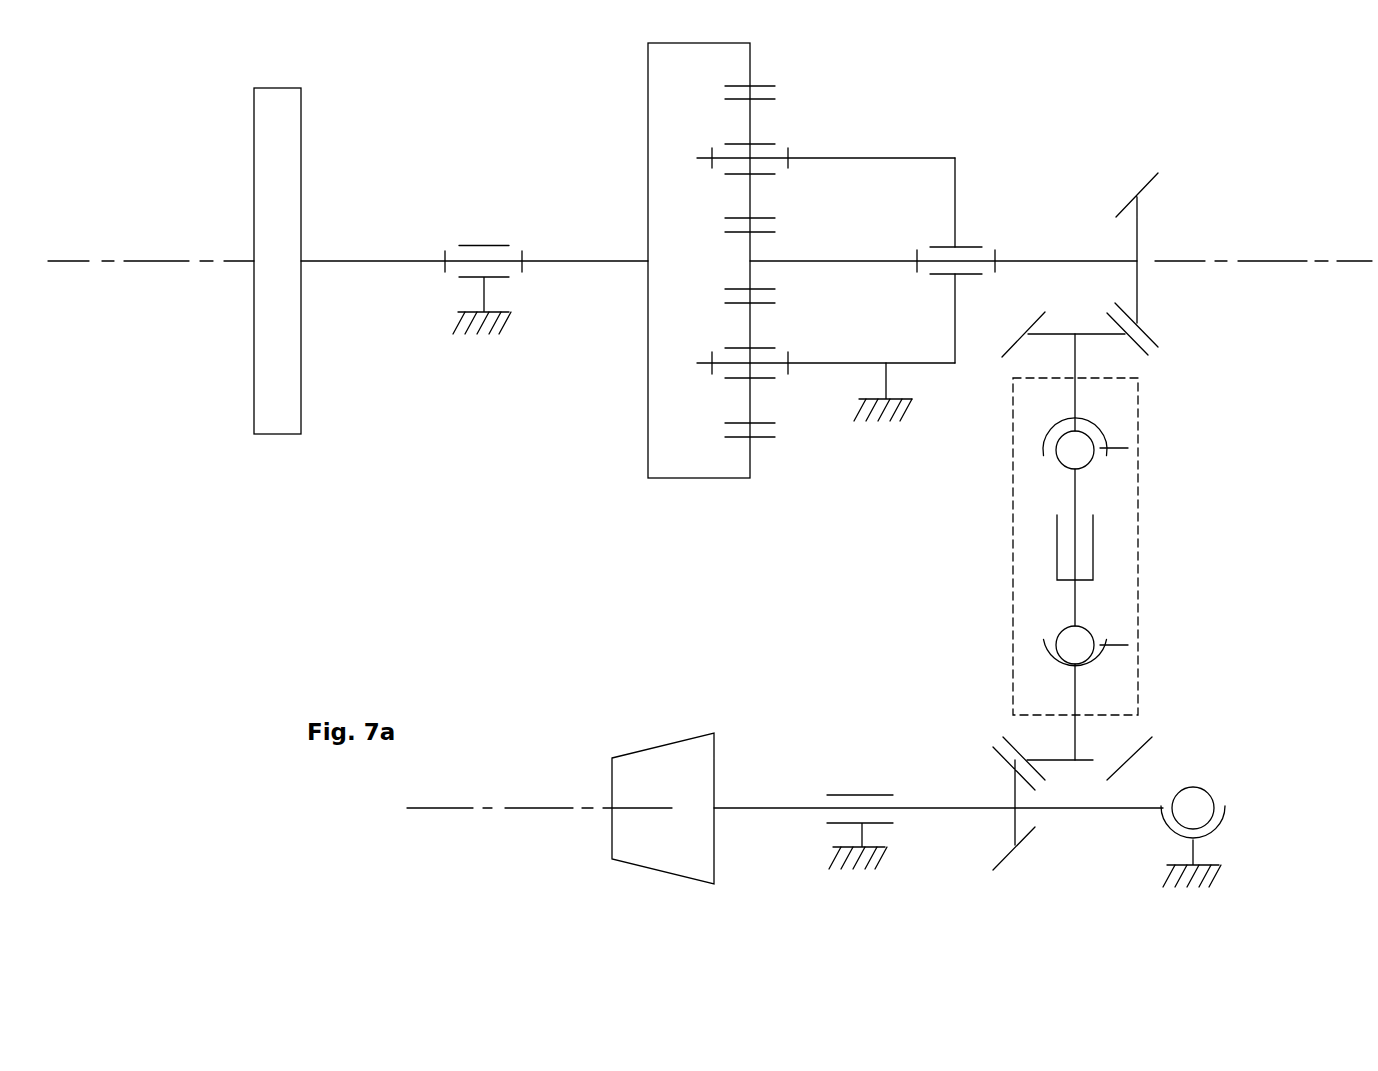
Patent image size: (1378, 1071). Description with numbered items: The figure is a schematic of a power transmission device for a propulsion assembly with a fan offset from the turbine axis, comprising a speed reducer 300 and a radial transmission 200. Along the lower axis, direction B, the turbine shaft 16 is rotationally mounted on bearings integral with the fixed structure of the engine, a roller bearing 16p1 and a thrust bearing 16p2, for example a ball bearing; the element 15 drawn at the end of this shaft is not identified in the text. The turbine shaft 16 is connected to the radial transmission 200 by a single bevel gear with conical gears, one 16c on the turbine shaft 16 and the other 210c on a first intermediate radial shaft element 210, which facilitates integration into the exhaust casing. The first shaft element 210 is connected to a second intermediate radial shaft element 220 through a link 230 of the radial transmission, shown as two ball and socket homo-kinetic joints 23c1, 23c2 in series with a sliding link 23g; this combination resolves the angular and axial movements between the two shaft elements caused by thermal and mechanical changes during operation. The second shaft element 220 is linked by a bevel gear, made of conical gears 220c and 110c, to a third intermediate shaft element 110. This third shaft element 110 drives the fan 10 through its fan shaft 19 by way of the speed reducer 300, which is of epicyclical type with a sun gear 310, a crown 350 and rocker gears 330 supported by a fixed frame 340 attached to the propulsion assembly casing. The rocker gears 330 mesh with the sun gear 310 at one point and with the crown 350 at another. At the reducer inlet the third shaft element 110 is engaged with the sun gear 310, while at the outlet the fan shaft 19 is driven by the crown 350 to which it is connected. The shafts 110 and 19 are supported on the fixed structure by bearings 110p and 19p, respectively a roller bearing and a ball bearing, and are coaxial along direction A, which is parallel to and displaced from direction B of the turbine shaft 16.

The fan 10 is at (255, 154).
The fan shaft 19 is at (348, 261).
The bearing 19p is at (497, 244).
The crown 350 is at (648, 83).
The rocker gears 330 is at (751, 127).
The fixed frame 340 is at (895, 157).
The sun gear 310 is at (751, 247).
The speed reducer 300 is at (868, 46).
The third intermediate shaft element 110 is at (1038, 261).
The bearing 110p is at (968, 242).
The conical gear 110c is at (1138, 232).
The conical gear 220c is at (1092, 334).
The second intermediate radial shaft element 220 is at (1077, 360).
The link 230 is at (1130, 515).
The radial transmission 200 is at (998, 517).
The homo-kinetic joint 23c2 is at (1090, 462).
The sliding link 23g is at (1093, 527).
The homo-kinetic joint 23c1 is at (1093, 628).
The first intermediate radial shaft element 210 is at (1076, 695).
The conical gear 210c is at (1082, 763).
The conical gear 16c is at (1013, 795).
The turbine shaft 16 is at (940, 808).
The roller bearing 16p1 is at (848, 795).
The thrust bearing 16p2 is at (1205, 792).
The propeller 15 is at (645, 815).
The direction A is at (1340, 261).
The direction B is at (525, 808).